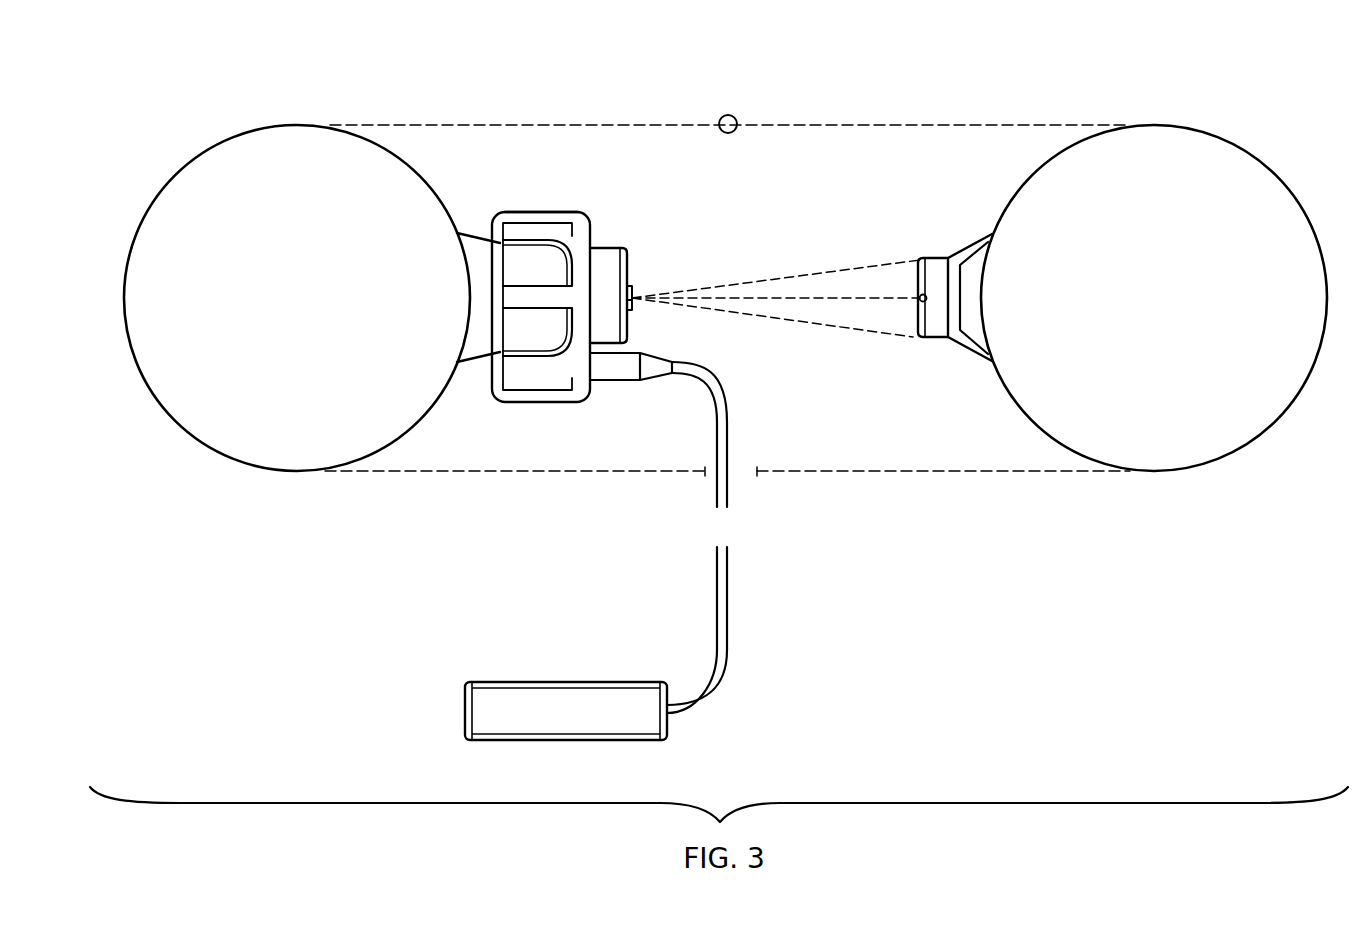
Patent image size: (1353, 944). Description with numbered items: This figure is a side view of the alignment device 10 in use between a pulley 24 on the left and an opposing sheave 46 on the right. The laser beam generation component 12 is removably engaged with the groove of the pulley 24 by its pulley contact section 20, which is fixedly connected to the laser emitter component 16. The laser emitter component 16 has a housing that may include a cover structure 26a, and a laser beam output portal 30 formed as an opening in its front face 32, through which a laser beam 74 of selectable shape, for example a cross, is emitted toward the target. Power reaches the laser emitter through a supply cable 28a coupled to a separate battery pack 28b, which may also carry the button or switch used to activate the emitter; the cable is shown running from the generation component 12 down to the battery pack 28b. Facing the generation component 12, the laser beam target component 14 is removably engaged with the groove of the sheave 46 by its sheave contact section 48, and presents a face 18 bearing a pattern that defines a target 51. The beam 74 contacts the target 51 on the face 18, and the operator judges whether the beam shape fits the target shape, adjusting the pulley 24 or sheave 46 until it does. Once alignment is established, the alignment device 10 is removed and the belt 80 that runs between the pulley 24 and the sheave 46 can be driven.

The alignment device 10 is at (573, 64).
The laser beam generation component 12 is at (508, 198).
The laser beam target component 14 is at (905, 225).
The laser emitter component 16 is at (582, 400).
The face 18 is at (915, 328).
The pulley contact section 20 is at (483, 212).
The pulley 24 is at (246, 137).
The cover structure 26a is at (558, 212).
The supply cable 28a is at (728, 598).
The battery pack 28b is at (575, 682).
The laser beam output portal 30 is at (632, 289).
The front face 32 is at (632, 306).
The sheave 46 is at (1179, 137).
The sheave contact section 48 is at (950, 370).
The target 51 is at (918, 297).
The laser beam 74 is at (790, 285).
The belt 80 is at (722, 116).